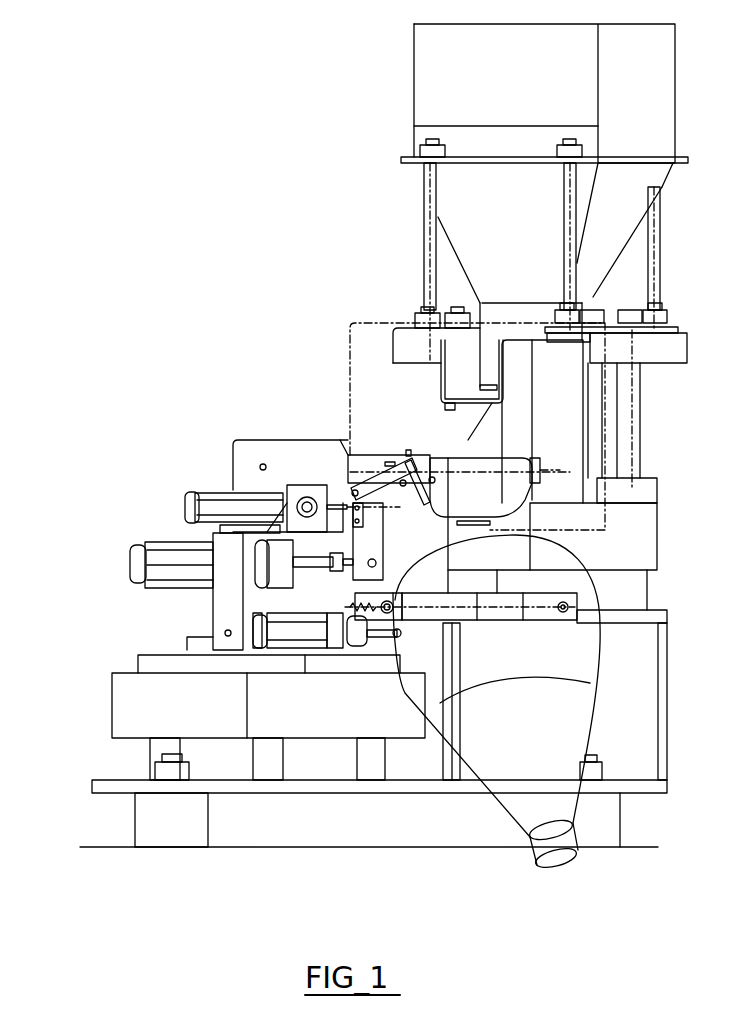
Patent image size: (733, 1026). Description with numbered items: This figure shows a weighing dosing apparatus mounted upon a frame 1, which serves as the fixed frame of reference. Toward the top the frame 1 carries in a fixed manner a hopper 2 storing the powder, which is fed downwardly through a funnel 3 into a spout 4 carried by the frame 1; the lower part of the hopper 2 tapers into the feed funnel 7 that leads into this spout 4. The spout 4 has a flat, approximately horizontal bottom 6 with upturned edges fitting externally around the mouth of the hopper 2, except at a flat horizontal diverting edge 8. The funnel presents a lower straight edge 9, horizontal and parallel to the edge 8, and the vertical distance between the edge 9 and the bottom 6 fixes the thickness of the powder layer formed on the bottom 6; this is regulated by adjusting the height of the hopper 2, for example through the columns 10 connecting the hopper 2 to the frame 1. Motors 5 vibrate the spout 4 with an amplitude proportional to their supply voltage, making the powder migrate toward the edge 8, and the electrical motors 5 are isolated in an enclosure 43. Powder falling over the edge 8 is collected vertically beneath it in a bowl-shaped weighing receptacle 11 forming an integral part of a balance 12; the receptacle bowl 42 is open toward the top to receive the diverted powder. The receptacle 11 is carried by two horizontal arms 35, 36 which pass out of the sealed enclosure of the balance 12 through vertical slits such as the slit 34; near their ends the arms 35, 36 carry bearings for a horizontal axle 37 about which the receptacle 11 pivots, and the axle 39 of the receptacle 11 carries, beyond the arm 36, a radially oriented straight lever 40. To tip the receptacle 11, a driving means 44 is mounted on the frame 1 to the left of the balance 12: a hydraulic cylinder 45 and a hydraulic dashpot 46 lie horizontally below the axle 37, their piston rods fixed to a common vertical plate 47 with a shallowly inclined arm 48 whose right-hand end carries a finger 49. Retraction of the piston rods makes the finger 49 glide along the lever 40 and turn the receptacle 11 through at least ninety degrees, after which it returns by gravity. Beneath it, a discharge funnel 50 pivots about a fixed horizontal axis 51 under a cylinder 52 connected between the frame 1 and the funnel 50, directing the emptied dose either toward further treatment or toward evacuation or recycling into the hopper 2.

The frame 1 is at (78, 823).
The hopper 2 is at (425, 85).
The funnel 3 is at (446, 393).
The spout 4 is at (426, 378).
The motors 5 is at (603, 405).
The bottom 6 is at (477, 414).
The funnel 7 is at (478, 345).
The diverting edge 8 is at (446, 406).
The lower straight edge 9 is at (532, 418).
The columns 10 is at (428, 215).
The weighing receptacle 11 is at (492, 522).
The balance 12 is at (237, 428).
The vertical slit 34 is at (347, 448).
The horizontal arm 35 is at (518, 450).
The horizontal arm 36 is at (347, 467).
The axle 37 is at (546, 468).
The axle 39 is at (408, 458).
The lever 40 is at (430, 503).
The measuring cup 42 is at (503, 513).
The enclosure 43 is at (346, 322).
The driving means 44 is at (152, 533).
The hydraulic cylinder 45 is at (192, 478).
The hydraulic dashpot 46 is at (152, 594).
The vertical plate 47 is at (374, 540).
The inclined arm 48 is at (386, 488).
The finger 49 is at (434, 481).
The discharge funnel 50 is at (567, 719).
The fixed horizontal axis 51 is at (612, 610).
The cylinder 52 is at (291, 615).